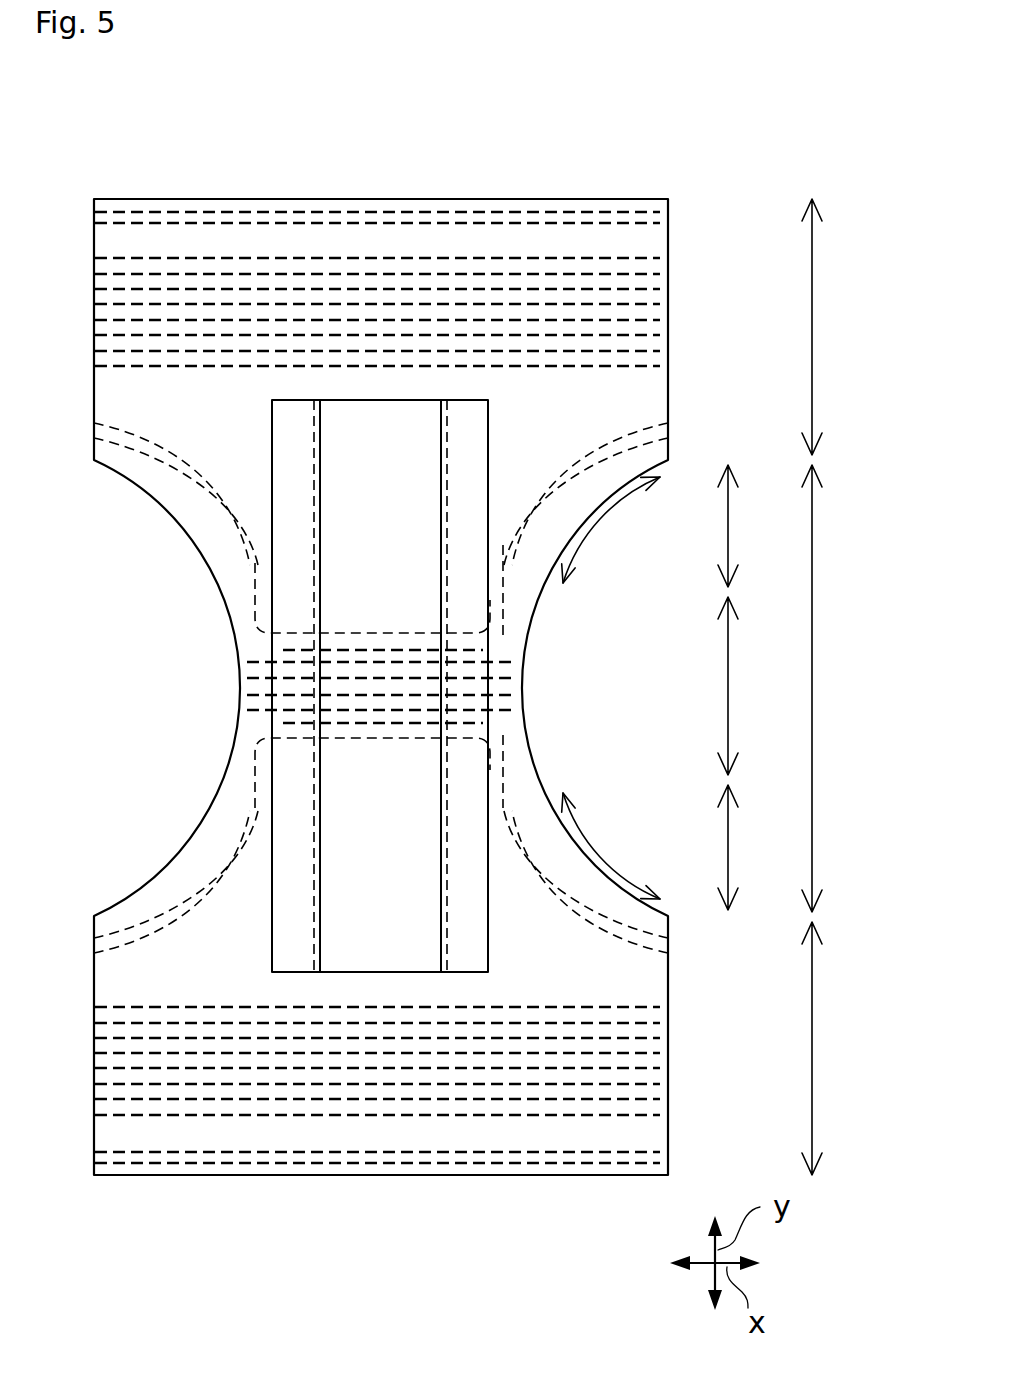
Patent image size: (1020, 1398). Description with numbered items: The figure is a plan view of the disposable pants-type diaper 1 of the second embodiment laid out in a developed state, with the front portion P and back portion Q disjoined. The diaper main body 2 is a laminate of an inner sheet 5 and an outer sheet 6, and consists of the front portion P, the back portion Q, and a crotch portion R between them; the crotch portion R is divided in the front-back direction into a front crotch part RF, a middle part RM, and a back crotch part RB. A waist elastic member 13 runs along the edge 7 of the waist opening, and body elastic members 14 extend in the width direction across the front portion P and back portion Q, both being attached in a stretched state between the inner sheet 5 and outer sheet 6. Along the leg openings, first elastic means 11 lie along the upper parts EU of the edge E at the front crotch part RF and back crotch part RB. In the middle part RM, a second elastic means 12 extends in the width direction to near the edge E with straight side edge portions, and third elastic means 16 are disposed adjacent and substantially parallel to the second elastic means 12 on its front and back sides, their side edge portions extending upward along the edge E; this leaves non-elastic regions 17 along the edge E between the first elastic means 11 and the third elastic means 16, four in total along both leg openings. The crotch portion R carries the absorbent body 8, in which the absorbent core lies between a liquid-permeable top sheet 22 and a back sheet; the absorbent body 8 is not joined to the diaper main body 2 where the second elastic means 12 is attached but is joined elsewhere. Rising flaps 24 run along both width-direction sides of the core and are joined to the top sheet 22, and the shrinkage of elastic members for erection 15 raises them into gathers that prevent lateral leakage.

The disposable pants-type diaper 1 is at (695, 175).
The diaper main body 2 is at (668, 237).
The inner sheet 5 is at (141, 236).
The outer sheet 6 is at (396, 200).
The edge of the waist opening 7 is at (552, 198).
The absorbent body 8 is at (343, 455).
The first elastic means 11 is at (618, 433).
The second elastic means 12 is at (250, 690).
The waist elastic member 13 is at (263, 218).
The body elastic members 14 is at (560, 290).
The elastic members for erection 15 is at (488, 972).
The third elastic means 16 is at (247, 630).
The non-elastic regions 17 is at (247, 578).
The top sheet 22 is at (367, 830).
The rising flaps 24 is at (473, 495).
The edge of the leg openings E is at (167, 878).
The upper parts of the edge of the leg openings EU is at (617, 503).
The front portion P is at (829, 327).
The back portion Q is at (832, 1048).
The crotch portion R is at (830, 688).
The front crotch part RF is at (753, 526).
The middle part RM is at (757, 686).
The back crotch part RB is at (754, 847).